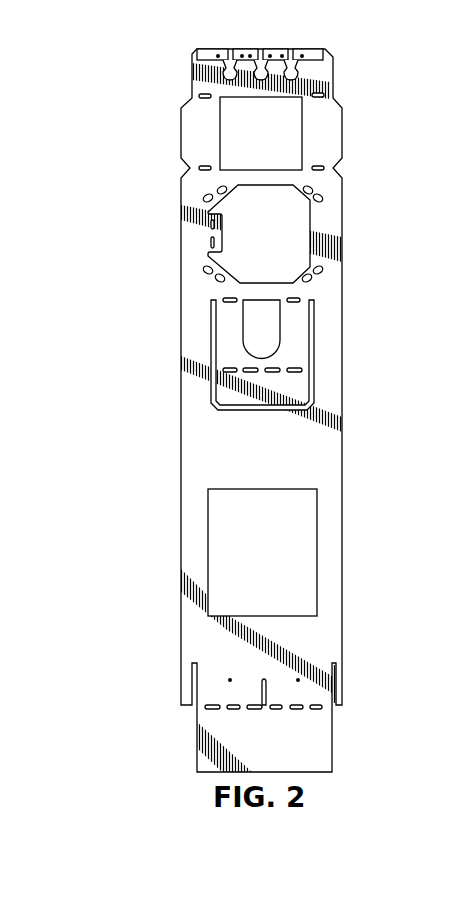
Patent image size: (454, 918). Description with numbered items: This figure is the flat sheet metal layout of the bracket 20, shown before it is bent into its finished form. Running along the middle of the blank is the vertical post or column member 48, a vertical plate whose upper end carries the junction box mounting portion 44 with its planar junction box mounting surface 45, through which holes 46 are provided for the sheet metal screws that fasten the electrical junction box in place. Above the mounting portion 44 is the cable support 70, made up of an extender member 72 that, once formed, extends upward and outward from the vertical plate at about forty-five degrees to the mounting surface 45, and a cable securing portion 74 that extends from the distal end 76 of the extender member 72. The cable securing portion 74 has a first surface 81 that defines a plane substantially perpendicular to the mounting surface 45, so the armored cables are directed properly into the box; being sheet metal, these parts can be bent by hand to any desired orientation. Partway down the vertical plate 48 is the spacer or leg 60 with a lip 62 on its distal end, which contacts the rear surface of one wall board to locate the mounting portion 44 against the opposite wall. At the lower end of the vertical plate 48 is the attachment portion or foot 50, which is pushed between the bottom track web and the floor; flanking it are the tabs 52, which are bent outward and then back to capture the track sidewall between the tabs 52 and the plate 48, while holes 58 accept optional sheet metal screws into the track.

The bracket 20 is at (70, 79).
The cable support 70 is at (374, 128).
The extender member 72 is at (328, 138).
The cable securing portion 74 is at (310, 60).
The distal end 76 is at (220, 97).
The first surface 81 is at (193, 55).
The junction box mounting portion 44 is at (374, 241).
The junction box mounting surface 45 is at (325, 215).
The holes 46 is at (303, 278).
The vertical post or column member 48 is at (312, 453).
The spacer or leg 60 is at (302, 345).
The lip 62 is at (238, 410).
The attachment portion or foot 50 is at (313, 742).
The tabs 52 is at (190, 687).
The holes 58 is at (230, 677).